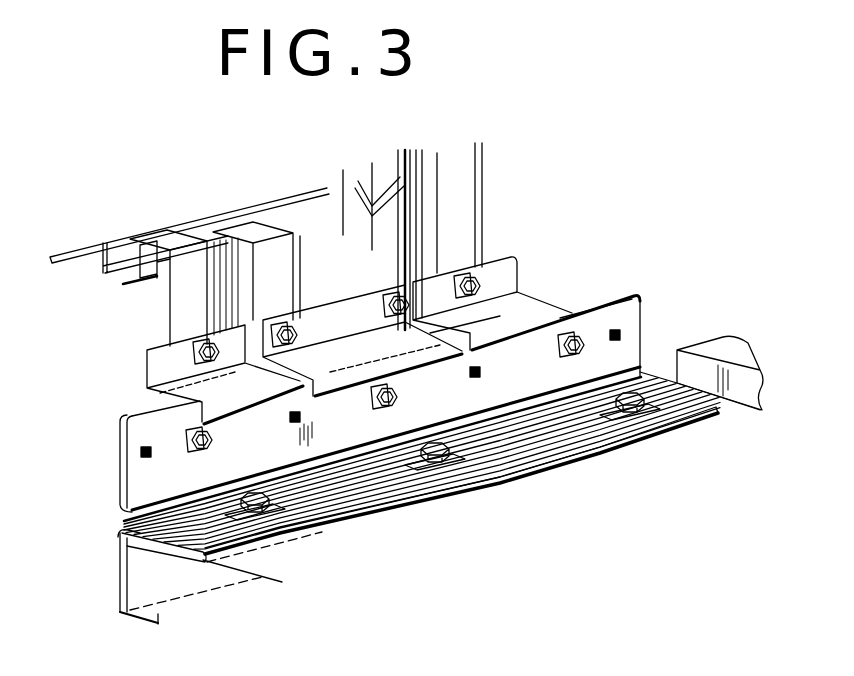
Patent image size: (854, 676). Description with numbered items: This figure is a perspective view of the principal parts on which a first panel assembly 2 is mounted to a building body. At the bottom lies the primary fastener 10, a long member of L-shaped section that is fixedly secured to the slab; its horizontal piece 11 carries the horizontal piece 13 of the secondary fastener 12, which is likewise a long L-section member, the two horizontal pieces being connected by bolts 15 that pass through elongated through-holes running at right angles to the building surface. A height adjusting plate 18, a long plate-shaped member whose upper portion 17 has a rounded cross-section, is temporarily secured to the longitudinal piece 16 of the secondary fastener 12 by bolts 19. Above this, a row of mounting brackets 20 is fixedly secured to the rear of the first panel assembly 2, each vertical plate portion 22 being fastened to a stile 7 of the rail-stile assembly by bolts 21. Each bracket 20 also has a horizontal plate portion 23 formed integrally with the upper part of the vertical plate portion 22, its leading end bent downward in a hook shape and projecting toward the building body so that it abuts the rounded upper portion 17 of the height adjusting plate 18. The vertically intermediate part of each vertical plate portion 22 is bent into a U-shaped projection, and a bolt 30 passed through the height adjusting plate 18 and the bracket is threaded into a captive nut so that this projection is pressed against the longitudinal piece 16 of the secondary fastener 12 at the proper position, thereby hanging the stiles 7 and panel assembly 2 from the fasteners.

The first panel assembly 2 is at (232, 207).
The stile 7 is at (350, 190).
The primary fastener 10 is at (199, 578).
The horizontal piece 11 is at (160, 557).
The secondary fastener 12 is at (416, 463).
The horizontal piece 13 is at (118, 533).
The bolt 15 is at (252, 495).
The longitudinal piece 16 is at (355, 425).
The upper portion 17 is at (140, 398).
The height adjusting plate 18 is at (147, 440).
The bolt 19 is at (300, 420).
The mounting bracket 20 is at (363, 310).
The bolt 21 is at (470, 266).
The vertical plate portion 22 is at (506, 270).
The horizontal plate portion 23 is at (565, 310).
The bolt 30 is at (400, 397).